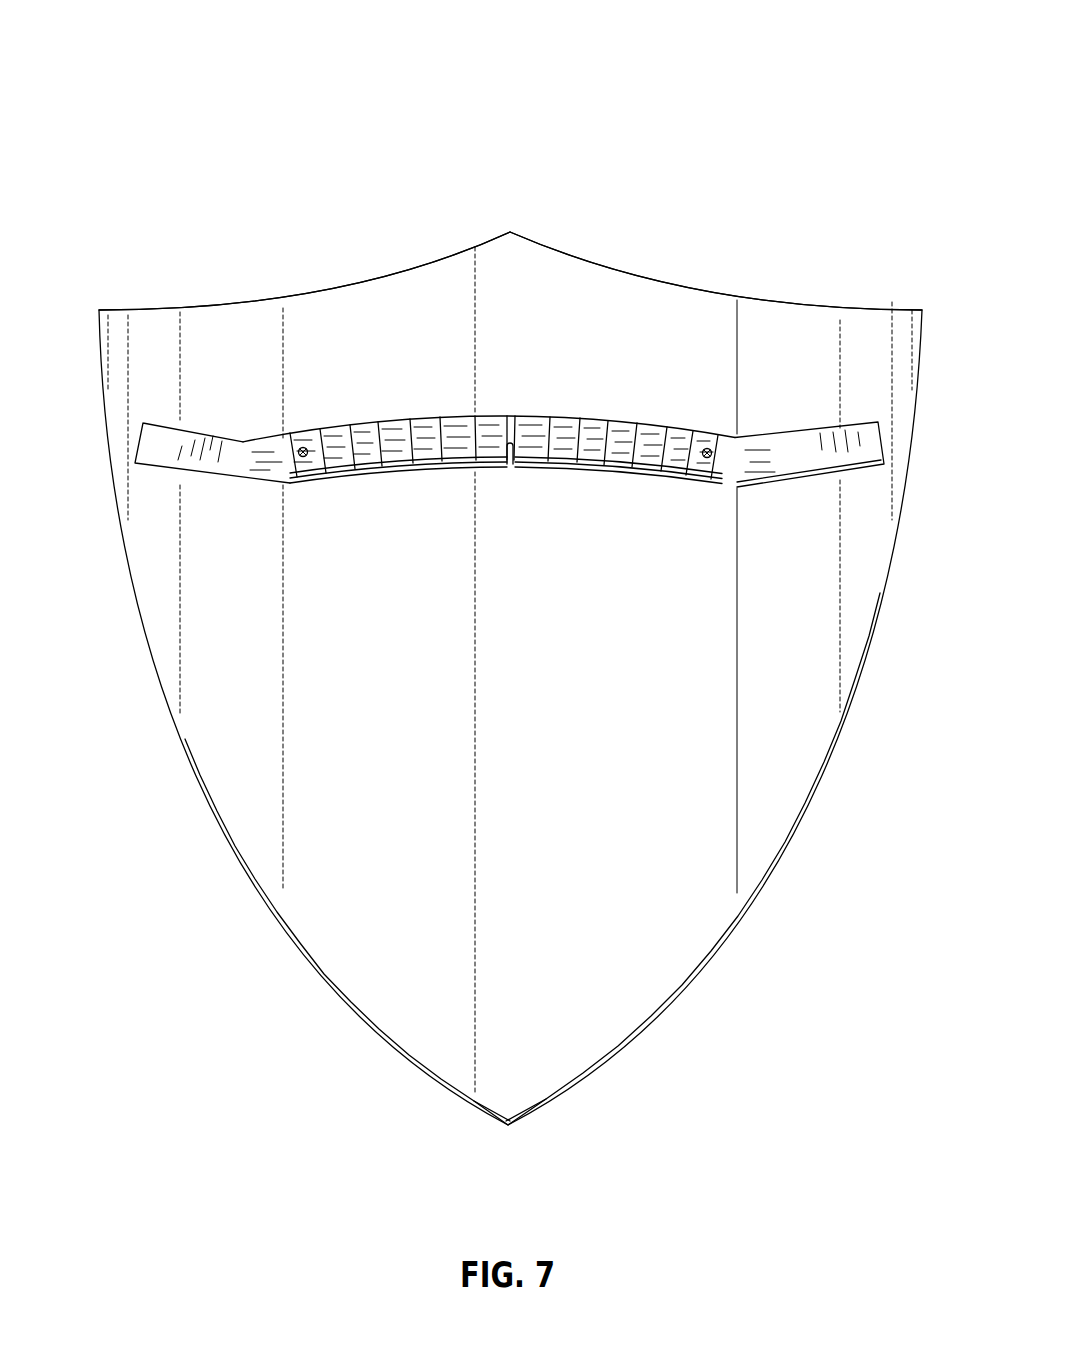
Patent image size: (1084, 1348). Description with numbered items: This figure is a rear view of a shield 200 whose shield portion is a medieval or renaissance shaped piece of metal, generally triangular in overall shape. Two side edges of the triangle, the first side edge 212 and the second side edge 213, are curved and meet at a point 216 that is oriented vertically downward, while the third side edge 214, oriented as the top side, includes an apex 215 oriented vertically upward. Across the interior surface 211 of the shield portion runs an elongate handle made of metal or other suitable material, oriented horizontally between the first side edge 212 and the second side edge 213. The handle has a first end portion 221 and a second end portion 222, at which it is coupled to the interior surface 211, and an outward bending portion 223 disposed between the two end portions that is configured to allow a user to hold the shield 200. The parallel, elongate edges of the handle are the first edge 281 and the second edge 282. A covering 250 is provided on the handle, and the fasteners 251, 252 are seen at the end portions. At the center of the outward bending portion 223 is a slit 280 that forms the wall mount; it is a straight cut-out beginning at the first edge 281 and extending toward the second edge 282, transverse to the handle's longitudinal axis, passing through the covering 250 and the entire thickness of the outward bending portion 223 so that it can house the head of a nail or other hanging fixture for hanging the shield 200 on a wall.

The shield 200 is at (886, 133).
The interior surface 211 is at (231, 717).
The first side edge 212 is at (256, 890).
The second side edge 213 is at (745, 912).
The third side edge 214 is at (678, 282).
The apex 215 is at (510, 232).
The point 216 is at (508, 1126).
The first end portion 221 is at (795, 463).
The second end portion 222 is at (168, 452).
The outward bending portion 223 is at (592, 452).
The covering 250 is at (375, 460).
The right fastener 251 is at (707, 448).
The left fastener 252 is at (303, 447).
The slit 280 is at (514, 444).
The first edge 281 is at (430, 473).
The second edge 282 is at (414, 421).